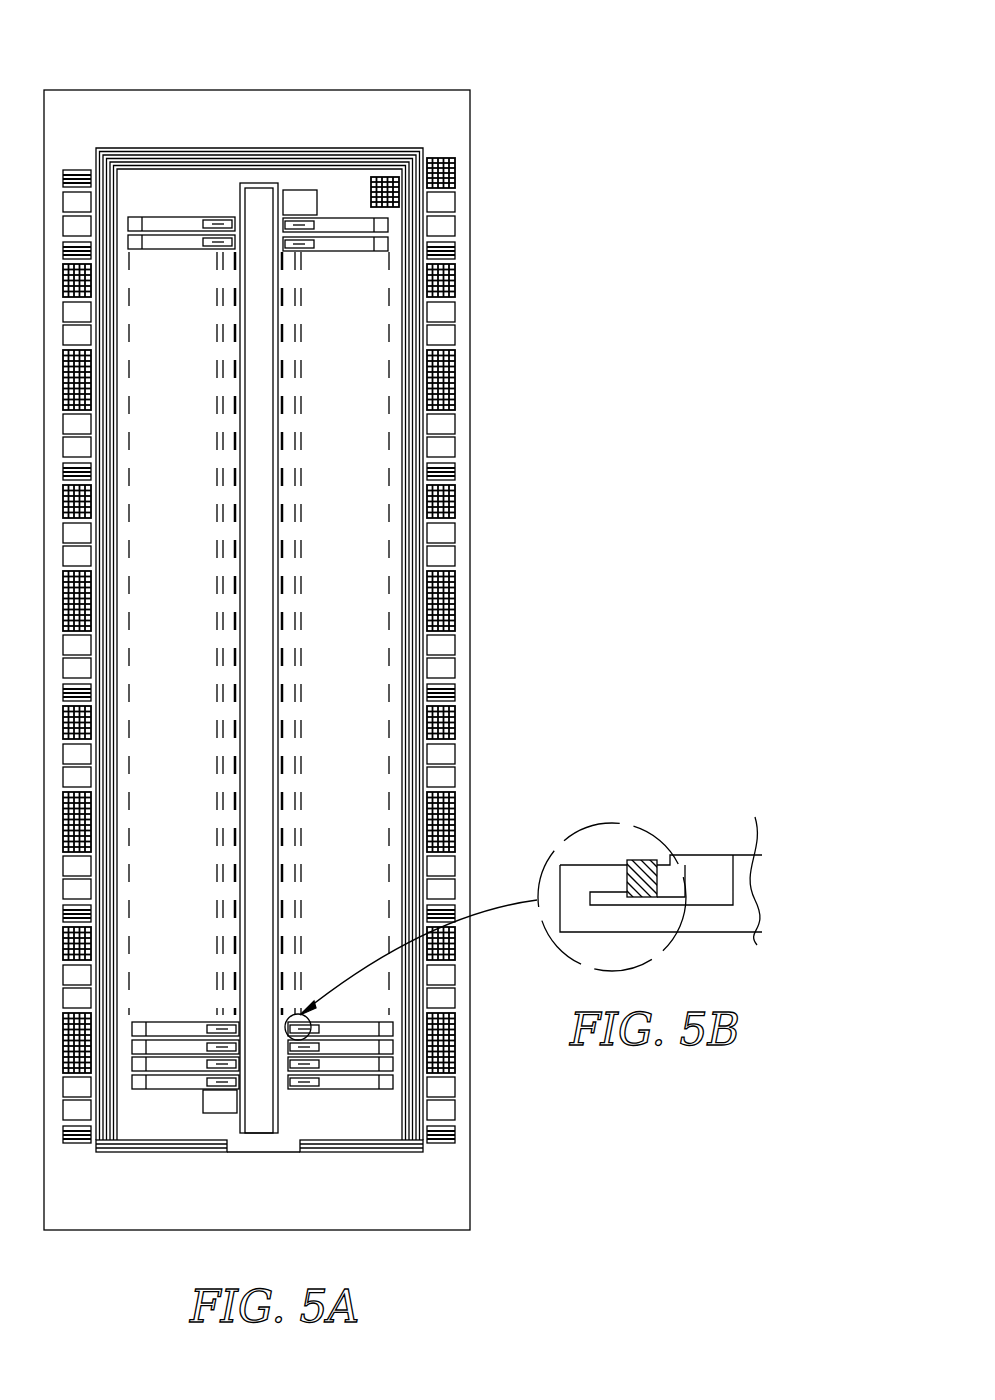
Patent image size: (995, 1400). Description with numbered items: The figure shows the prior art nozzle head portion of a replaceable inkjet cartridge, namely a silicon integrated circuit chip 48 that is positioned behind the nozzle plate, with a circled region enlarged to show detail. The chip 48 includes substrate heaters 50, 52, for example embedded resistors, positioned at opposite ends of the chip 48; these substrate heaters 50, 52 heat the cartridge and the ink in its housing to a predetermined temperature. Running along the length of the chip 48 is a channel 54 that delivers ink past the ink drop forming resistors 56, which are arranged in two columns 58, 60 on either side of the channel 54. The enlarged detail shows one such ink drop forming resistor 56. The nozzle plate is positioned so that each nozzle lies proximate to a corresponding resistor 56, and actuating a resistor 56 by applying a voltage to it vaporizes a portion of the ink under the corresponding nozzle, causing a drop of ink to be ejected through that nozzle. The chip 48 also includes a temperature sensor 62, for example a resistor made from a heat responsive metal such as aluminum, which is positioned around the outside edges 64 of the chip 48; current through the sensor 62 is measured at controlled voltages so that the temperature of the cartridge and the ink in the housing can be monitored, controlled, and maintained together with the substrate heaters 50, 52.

In FIG. 5A, the silicon integrated circuit chip 48 is at (505, 253).
In FIG. 5A, the substrate heater 50 is at (303, 203).
In FIG. 5A, the substrate heater 52 is at (218, 1110).
In FIG. 5A, the channel 54 is at (268, 462).
In FIG. 5B, the ink drop forming resistor 56 is at (640, 860).
In FIG. 5A, the column 58 is at (220, 223).
In FIG. 5A, the column 60 is at (292, 210).
In FIG. 5A, the temperature sensor 62 is at (402, 150).
In FIG. 5A, the outside edges 64 is at (97, 103).